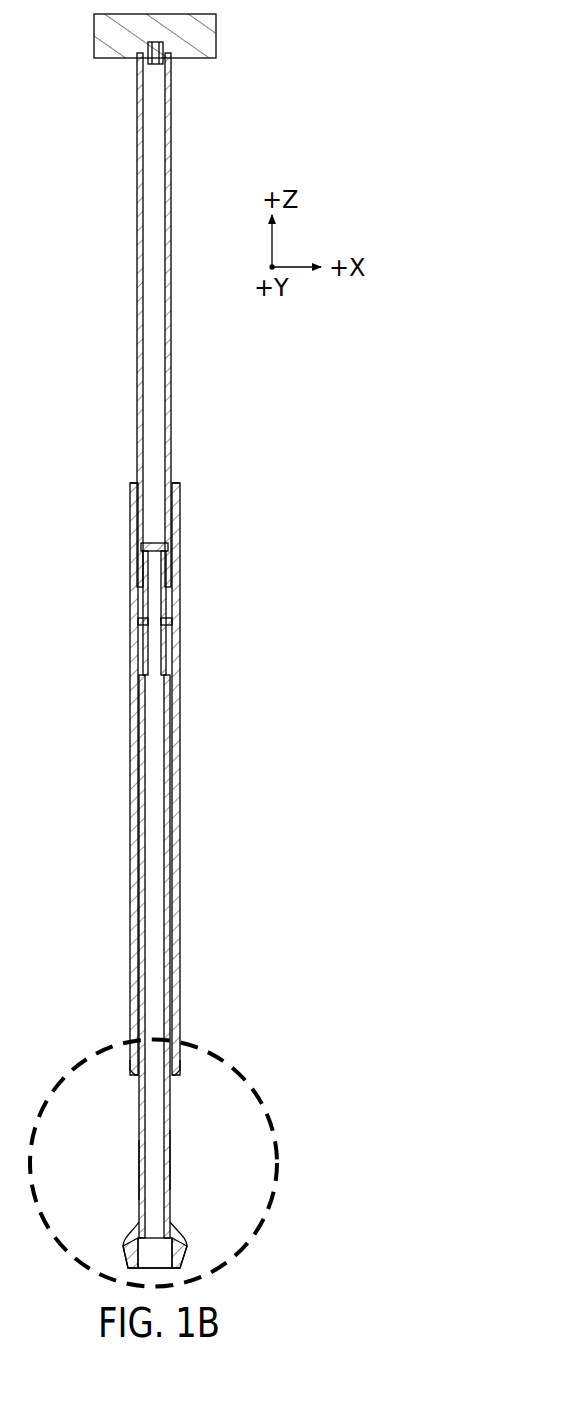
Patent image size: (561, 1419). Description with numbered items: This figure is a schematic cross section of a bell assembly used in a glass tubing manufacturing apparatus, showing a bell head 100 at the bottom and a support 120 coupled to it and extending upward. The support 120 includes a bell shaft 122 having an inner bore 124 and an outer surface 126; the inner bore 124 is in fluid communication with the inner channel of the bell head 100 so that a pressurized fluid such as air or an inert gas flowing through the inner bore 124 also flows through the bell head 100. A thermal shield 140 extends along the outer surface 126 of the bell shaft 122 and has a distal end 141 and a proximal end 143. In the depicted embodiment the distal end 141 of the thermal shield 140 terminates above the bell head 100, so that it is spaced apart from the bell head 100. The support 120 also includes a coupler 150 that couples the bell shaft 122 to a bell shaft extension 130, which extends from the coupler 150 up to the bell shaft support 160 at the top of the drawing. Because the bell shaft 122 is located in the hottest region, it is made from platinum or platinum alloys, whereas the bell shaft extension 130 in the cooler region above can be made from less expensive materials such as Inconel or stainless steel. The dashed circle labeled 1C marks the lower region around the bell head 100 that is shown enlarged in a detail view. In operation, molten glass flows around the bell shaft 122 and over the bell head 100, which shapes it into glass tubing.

The bell head 100 is at (186, 1244).
The support 120 is at (224, 397).
The bell shaft 122 is at (137, 1170).
The inner bore 124 is at (157, 838).
The outer surface 126 is at (171, 1156).
The bell shaft extension 130 is at (172, 178).
The thermal shield 140 is at (180, 735).
The distal end 141 is at (174, 1078).
The proximal end 143 is at (180, 485).
The coupler 150 is at (136, 651).
The bell shaft support 160 is at (216, 42).
The detail view callout 1C is at (277, 1158).